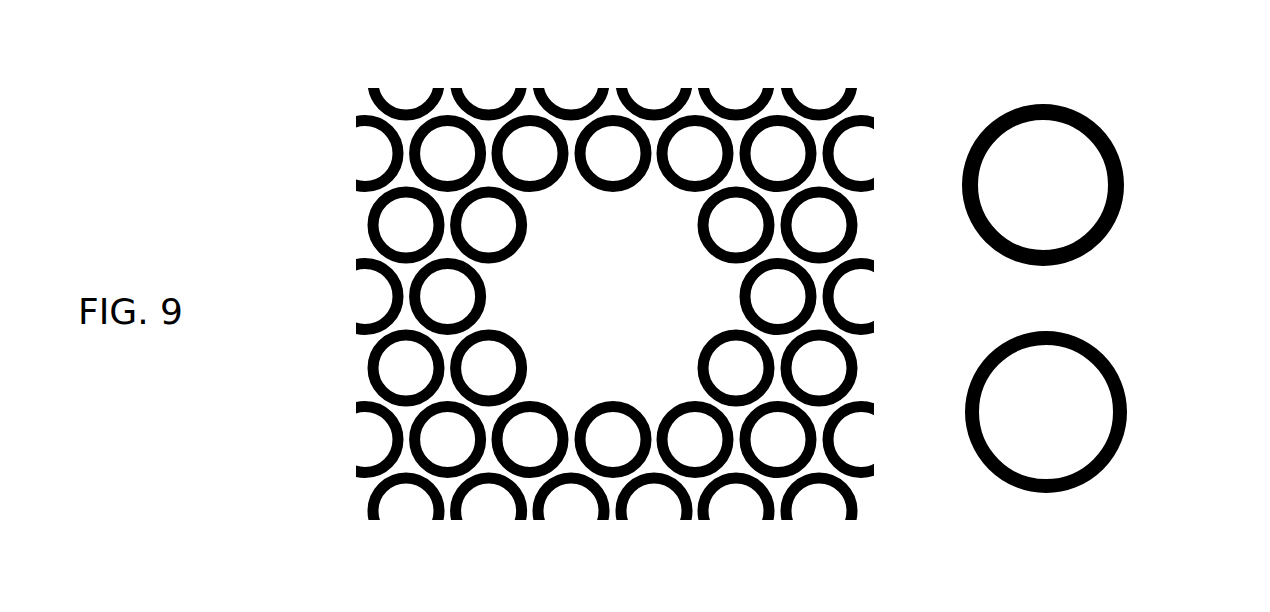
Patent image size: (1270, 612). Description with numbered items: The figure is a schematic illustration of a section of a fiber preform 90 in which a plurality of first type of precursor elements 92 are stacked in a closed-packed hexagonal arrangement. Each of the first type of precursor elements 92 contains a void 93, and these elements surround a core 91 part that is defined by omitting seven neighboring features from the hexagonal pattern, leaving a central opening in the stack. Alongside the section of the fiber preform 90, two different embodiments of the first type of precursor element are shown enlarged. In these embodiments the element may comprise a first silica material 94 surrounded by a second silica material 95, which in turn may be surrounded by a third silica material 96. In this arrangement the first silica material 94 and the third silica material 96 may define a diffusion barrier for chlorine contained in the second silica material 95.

The fiber preform 90 is at (578, 293).
The core 91 is at (607, 305).
The first type of precursor elements 92 is at (393, 268).
The voids 93 is at (443, 293).
The first silica material 94 is at (1126, 298).
The second silica material 95 is at (1121, 337).
The third silica material 96 is at (1080, 107).